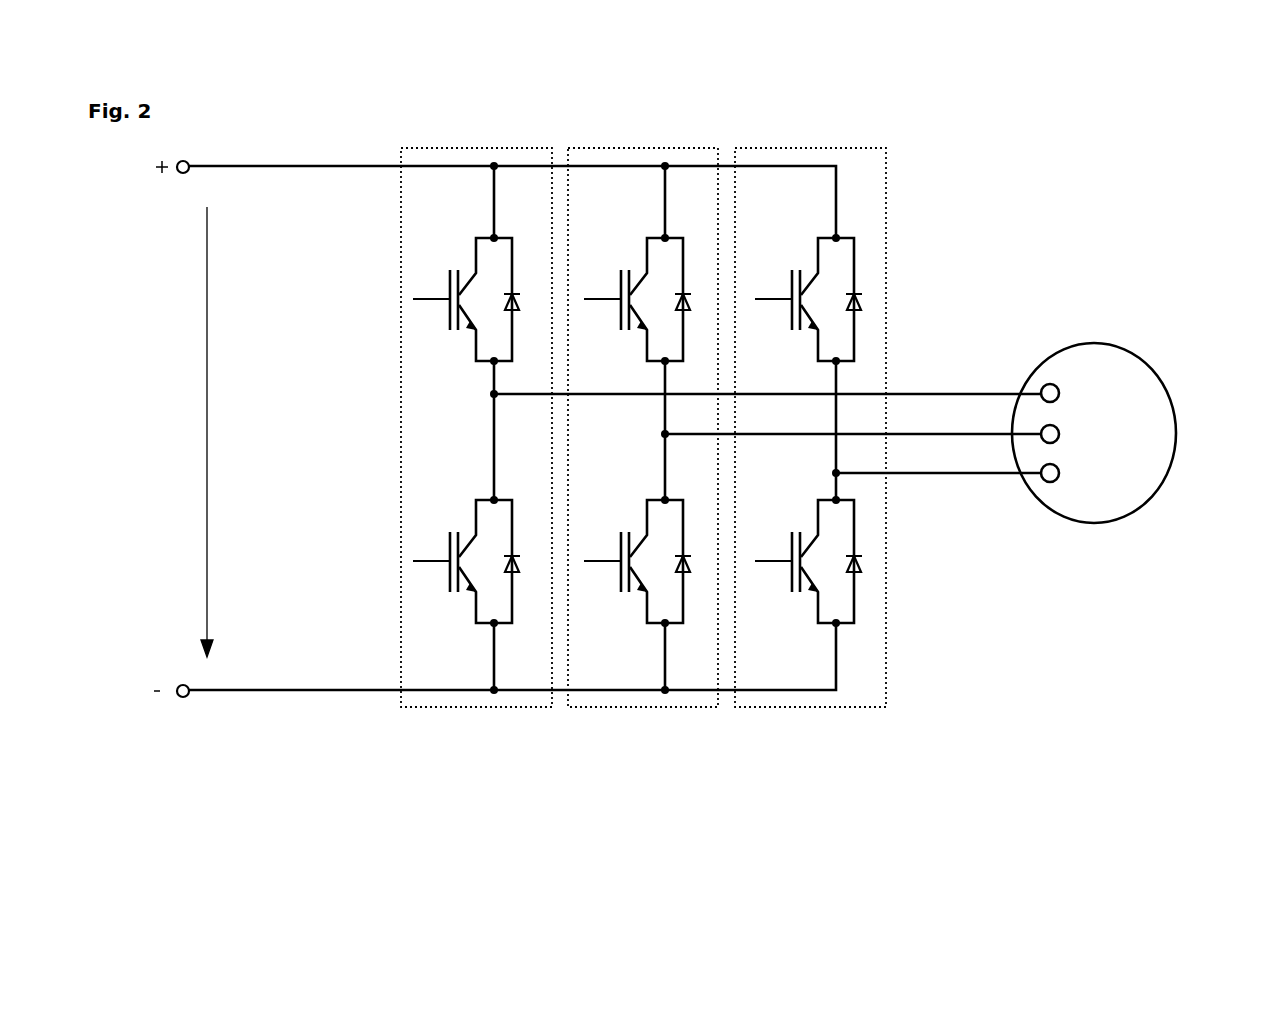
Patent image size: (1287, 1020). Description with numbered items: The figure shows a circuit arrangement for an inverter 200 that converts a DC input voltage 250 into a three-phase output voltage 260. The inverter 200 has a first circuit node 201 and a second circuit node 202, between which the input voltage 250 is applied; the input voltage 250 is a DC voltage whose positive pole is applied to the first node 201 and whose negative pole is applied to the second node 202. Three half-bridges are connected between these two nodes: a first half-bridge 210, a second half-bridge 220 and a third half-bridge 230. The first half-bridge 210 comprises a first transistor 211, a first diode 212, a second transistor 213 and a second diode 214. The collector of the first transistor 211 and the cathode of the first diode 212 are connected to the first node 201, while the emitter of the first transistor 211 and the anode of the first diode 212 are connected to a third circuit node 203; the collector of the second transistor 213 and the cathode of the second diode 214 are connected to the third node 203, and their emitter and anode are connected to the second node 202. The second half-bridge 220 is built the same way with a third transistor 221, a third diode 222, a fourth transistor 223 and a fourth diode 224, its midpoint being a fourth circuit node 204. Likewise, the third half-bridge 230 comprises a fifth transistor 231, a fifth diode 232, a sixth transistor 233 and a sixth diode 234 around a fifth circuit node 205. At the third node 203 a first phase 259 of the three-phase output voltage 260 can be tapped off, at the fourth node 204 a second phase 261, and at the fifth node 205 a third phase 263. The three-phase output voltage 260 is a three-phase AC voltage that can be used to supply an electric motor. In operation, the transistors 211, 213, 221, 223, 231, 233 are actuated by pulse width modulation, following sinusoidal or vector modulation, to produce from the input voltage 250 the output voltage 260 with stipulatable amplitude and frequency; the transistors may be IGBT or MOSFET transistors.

The inverter 200 is at (1003, 122).
The first circuit node 201 is at (189, 163).
The second circuit node 202 is at (185, 697).
The third circuit node 203 is at (494, 394).
The fourth circuit node 204 is at (665, 434).
The fifth circuit node 205 is at (838, 475).
The first half-bridge 210 is at (424, 708).
The first transistor 211 is at (461, 287).
The first diode 212 is at (523, 194).
The second transistor 213 is at (407, 563).
The second diode 214 is at (540, 673).
The second half-bridge 220 is at (596, 708).
The third transistor 221 is at (632, 287).
The third diode 222 is at (694, 194).
The fourth transistor 223 is at (633, 580).
The fourth diode 224 is at (686, 669).
The third half-bridge 230 is at (815, 708).
The fifth transistor 231 is at (803, 287).
The fifth diode 232 is at (928, 278).
The sixth transistor 233 is at (804, 574).
The sixth diode 234 is at (924, 629).
The input voltage 250 is at (207, 480).
The first phase 259 is at (1058, 385).
The three-phase output voltage 260 is at (1175, 455).
The second phase 261 is at (1060, 432).
The third phase 263 is at (1060, 477).